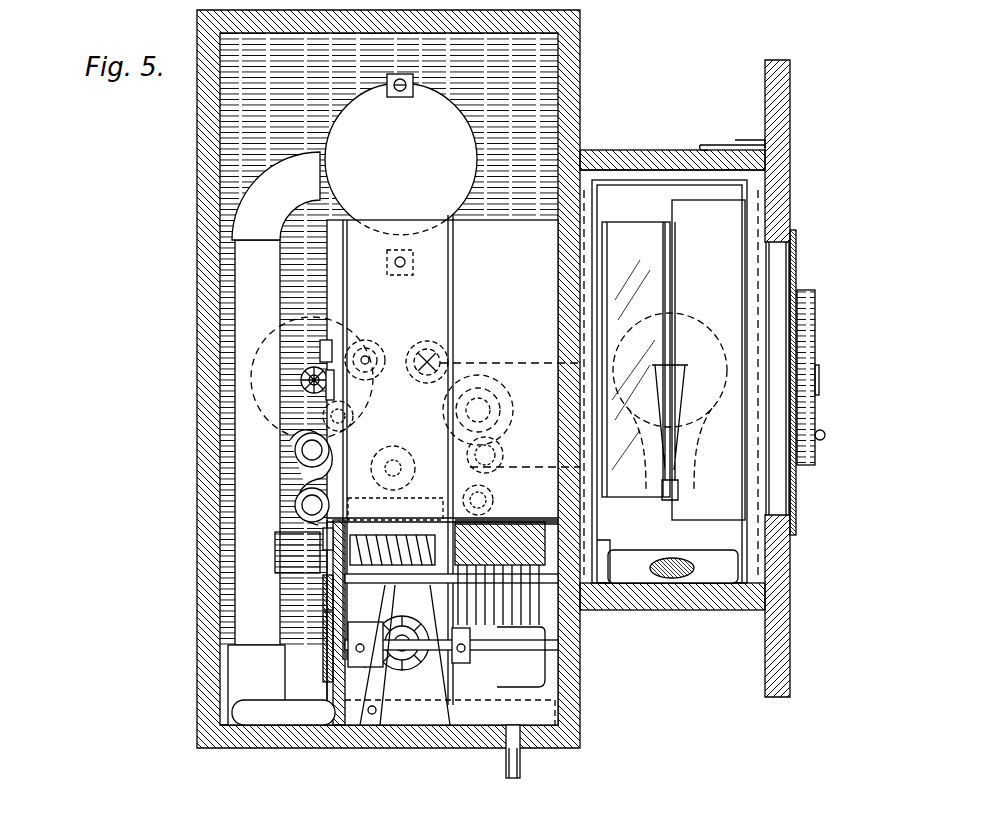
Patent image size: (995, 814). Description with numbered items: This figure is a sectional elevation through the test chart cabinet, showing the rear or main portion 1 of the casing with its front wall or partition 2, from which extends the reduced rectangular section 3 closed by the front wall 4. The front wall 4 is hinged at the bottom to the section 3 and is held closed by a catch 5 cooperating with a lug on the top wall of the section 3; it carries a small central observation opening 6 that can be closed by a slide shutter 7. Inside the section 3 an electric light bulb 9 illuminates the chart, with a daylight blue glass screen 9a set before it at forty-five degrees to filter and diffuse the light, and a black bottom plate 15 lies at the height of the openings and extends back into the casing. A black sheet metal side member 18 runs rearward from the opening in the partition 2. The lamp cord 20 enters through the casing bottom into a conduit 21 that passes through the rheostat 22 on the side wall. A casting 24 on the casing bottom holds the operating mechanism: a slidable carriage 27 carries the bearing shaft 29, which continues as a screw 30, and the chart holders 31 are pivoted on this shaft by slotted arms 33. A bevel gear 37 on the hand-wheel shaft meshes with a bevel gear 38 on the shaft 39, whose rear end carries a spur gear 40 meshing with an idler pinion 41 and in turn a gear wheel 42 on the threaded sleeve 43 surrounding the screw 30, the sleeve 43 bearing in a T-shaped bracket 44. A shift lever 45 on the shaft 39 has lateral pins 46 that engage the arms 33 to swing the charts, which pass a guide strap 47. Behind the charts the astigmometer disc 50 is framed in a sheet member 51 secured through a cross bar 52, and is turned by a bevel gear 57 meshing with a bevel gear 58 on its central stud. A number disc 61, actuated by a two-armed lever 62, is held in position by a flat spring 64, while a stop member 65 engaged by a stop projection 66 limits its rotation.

The rear or main portion of casing 1 is at (283, 742).
The front wall or partition 2 is at (580, 98).
The reduced rectangular section 3 is at (638, 150).
The front wall 4 is at (790, 645).
The catch 5 is at (700, 146).
The observation opening 6 is at (773, 276).
The slide shutter 7 is at (790, 492).
The electric light bulb 9 is at (690, 332).
The daylight blue glass screen 9a is at (655, 300).
The bottom plate 15 is at (642, 524).
The side member 18 is at (318, 262).
The cord 20 is at (522, 770).
The conduit 21 is at (316, 710).
The rheostat 22 is at (401, 154).
The casting 24 is at (342, 722).
The slidable carriage 27 is at (451, 551).
The bearing shaft 29 is at (548, 530).
The screw 30 is at (392, 542).
The chart holder 31 is at (455, 308).
The arm or projection 33 is at (500, 581).
The bevel gear 37 is at (401, 631).
The bevel gear 38 is at (372, 672).
The shaft 39 is at (425, 655).
The spur gear 40 is at (328, 665).
The idler pinion 41 is at (325, 612).
The gear wheel 42 is at (315, 565).
The internal screw threaded sleeve 43 is at (362, 522).
The T-shaped bracket 44 is at (292, 572).
The shift lever 45 is at (452, 688).
The lateral pin 46 is at (447, 715).
The guide strap 47 is at (374, 485).
The disc 50 is at (330, 470).
The rectangular sheet member 51 is at (347, 292).
The cross bar 52 is at (360, 350).
The bevel gear 57 is at (300, 383).
The bevel gear 58 is at (315, 398).
The number disc 61 is at (500, 368).
The two-armed lever 62 is at (405, 700).
The flat spring 64 is at (400, 355).
The stop member 65 is at (510, 512).
The stop projection 66 is at (505, 455).